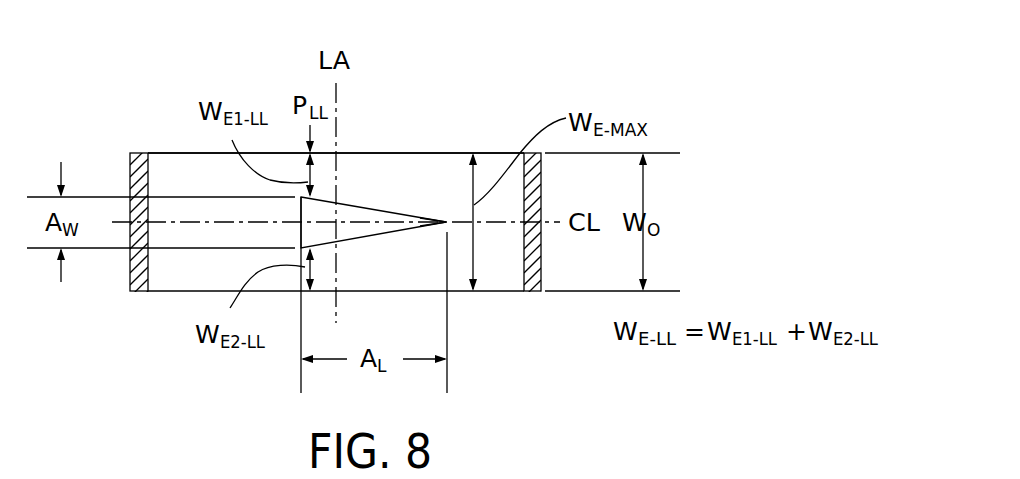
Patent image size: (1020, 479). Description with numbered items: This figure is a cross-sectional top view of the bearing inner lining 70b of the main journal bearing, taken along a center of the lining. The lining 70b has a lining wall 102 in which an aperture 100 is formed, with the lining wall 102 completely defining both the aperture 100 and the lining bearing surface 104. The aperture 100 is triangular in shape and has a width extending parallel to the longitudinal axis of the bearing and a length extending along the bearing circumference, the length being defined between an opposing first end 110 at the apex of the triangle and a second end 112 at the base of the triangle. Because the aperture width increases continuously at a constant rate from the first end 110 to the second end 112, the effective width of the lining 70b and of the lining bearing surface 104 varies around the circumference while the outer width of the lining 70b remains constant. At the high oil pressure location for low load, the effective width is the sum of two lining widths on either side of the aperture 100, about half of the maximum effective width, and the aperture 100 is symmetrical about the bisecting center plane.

The bearing inner lining 70b is at (524, 110).
The aperture 100 is at (362, 241).
The lining wall 102 is at (529, 284).
The lining bearing surface 104 is at (438, 170).
The first end 110 is at (443, 221).
The second end 112 is at (298, 218).